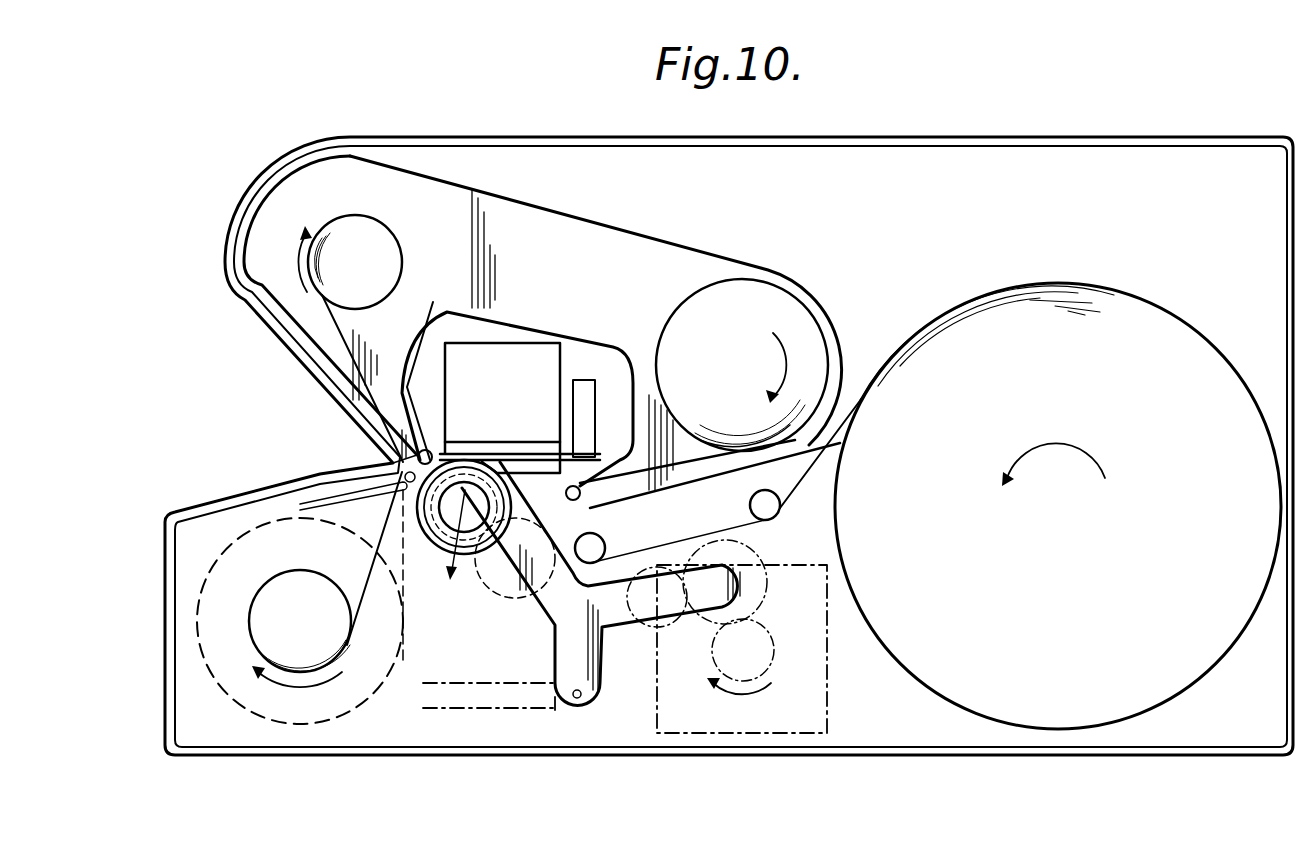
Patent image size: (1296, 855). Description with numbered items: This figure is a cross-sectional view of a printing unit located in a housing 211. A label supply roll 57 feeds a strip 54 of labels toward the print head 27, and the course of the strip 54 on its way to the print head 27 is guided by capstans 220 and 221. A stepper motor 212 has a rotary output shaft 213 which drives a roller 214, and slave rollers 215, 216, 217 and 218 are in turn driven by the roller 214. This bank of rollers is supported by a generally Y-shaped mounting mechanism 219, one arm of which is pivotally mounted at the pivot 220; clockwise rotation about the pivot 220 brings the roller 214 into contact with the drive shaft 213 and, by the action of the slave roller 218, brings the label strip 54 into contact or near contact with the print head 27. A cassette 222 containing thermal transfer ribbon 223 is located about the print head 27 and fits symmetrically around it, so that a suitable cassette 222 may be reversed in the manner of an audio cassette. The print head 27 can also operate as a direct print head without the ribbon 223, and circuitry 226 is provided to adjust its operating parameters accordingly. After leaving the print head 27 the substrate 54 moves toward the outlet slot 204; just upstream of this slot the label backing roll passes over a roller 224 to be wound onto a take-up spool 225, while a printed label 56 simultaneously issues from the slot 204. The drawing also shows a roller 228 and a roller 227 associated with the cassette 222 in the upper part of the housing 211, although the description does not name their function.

The housing 211 is at (940, 137).
The belt roller 228 is at (388, 247).
The roller 224 is at (440, 296).
The cassette 222 is at (722, 240).
The belt roller 227 is at (672, 305).
The circuitry 226 is at (585, 385).
The thermal transfer ribbon 223 is at (712, 432).
The label supply roll 57 is at (1133, 320).
The print head 27 is at (492, 447).
The outlet slot 204 is at (366, 458).
The printed label 56 is at (323, 478).
The slave roller 218 is at (293, 503).
The take-up spool 225 is at (250, 620).
The slave roller 217 is at (495, 595).
The slave roller 216 is at (530, 623).
The Y-shaped mounting mechanism 219 is at (540, 628).
The pivot 220 is at (577, 698).
The slave roller 215 is at (657, 627).
The capstan 221 is at (604, 548).
The strip of labels 54 is at (818, 480).
The roller 214 is at (770, 568).
The rotary output shaft 213 is at (767, 630).
The stepper motor 212 is at (800, 693).